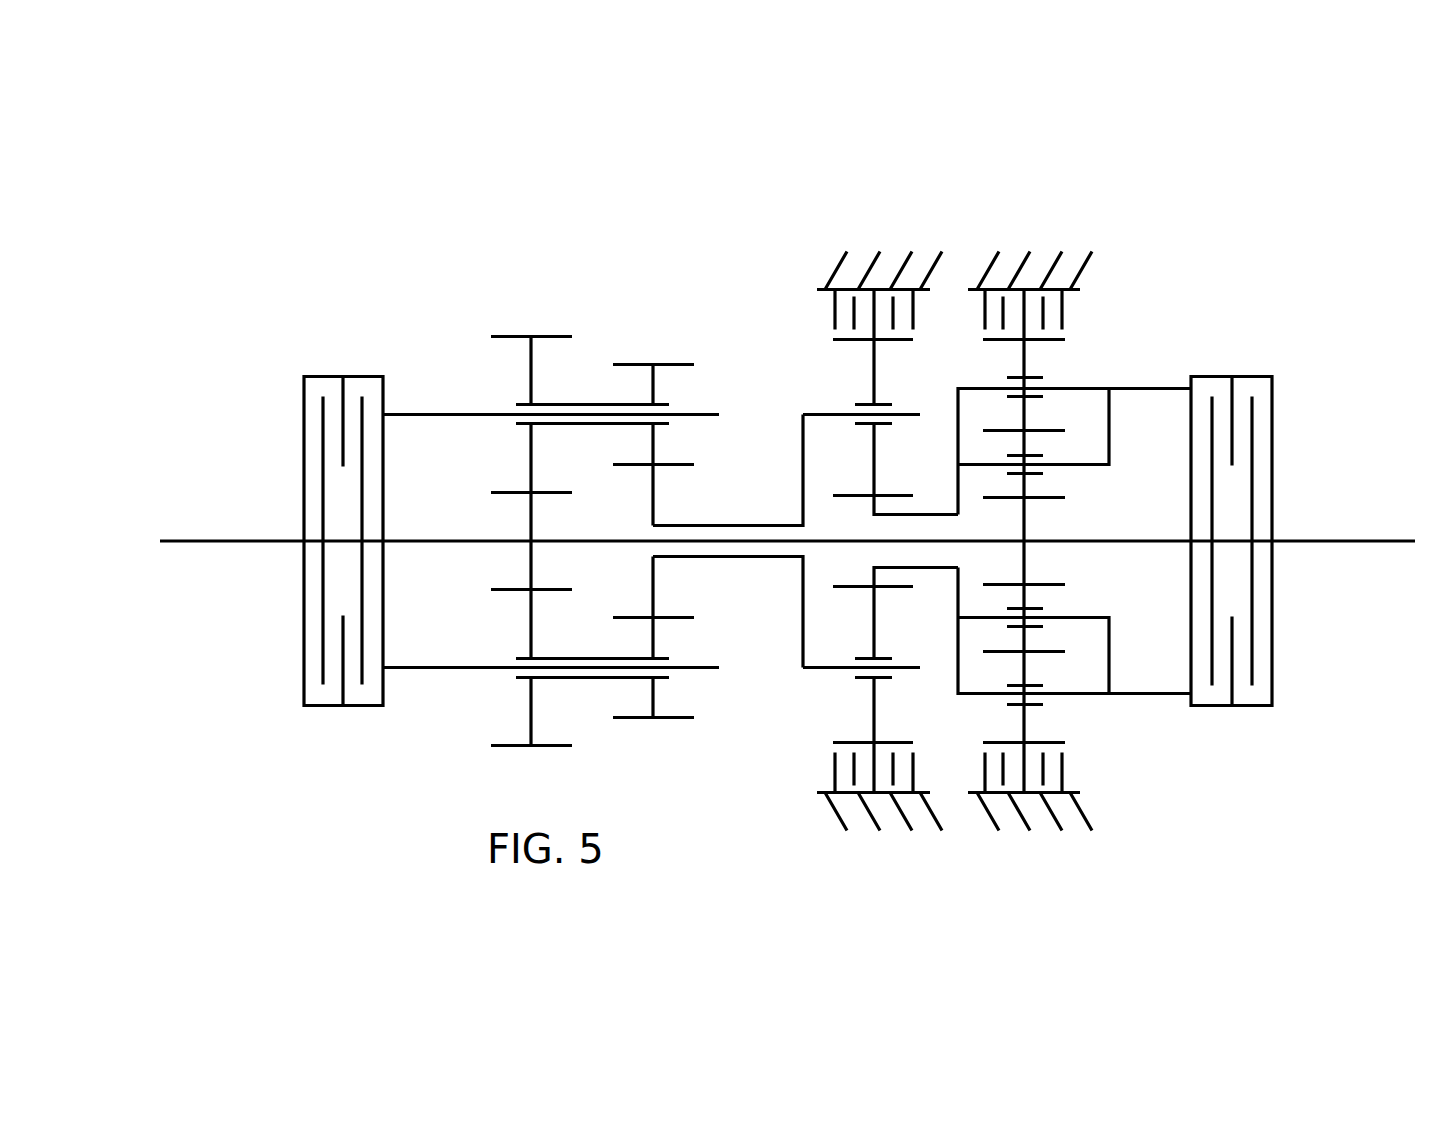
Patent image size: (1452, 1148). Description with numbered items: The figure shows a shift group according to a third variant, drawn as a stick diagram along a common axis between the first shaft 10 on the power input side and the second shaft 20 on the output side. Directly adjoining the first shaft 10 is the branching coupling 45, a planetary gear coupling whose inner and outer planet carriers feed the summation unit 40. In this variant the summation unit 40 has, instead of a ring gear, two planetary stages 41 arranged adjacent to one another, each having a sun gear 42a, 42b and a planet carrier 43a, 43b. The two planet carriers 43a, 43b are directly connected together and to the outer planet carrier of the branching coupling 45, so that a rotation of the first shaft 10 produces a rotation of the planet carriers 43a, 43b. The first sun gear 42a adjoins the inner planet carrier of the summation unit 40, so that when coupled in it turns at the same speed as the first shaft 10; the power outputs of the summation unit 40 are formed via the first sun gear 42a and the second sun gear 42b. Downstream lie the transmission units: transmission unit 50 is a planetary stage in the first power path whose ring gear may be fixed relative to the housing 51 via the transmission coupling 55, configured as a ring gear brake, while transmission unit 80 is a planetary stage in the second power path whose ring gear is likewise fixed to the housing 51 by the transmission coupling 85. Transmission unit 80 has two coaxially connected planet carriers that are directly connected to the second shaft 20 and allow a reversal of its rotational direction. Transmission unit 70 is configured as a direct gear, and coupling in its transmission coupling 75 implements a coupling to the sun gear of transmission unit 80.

The first shaft 10 is at (202, 541).
The second shaft 20 is at (1375, 541).
The summation unit 40 is at (550, 467).
The planetary stage 41 is at (680, 439).
The first sun gear 42a is at (531, 562).
The second sun gear 42b is at (655, 590).
The first planet carrier 43a is at (531, 709).
The second planet carrier 43b is at (655, 698).
The branching coupling 45 is at (329, 348).
The transmission unit 50 is at (830, 463).
The housing 51 is at (870, 260).
The transmission coupling 55 is at (835, 320).
The transmission unit 70 is at (1276, 462).
The transmission coupling 75 is at (1274, 393).
The transmission unit 80 is at (1074, 463).
The transmission coupling 85 is at (1065, 317).